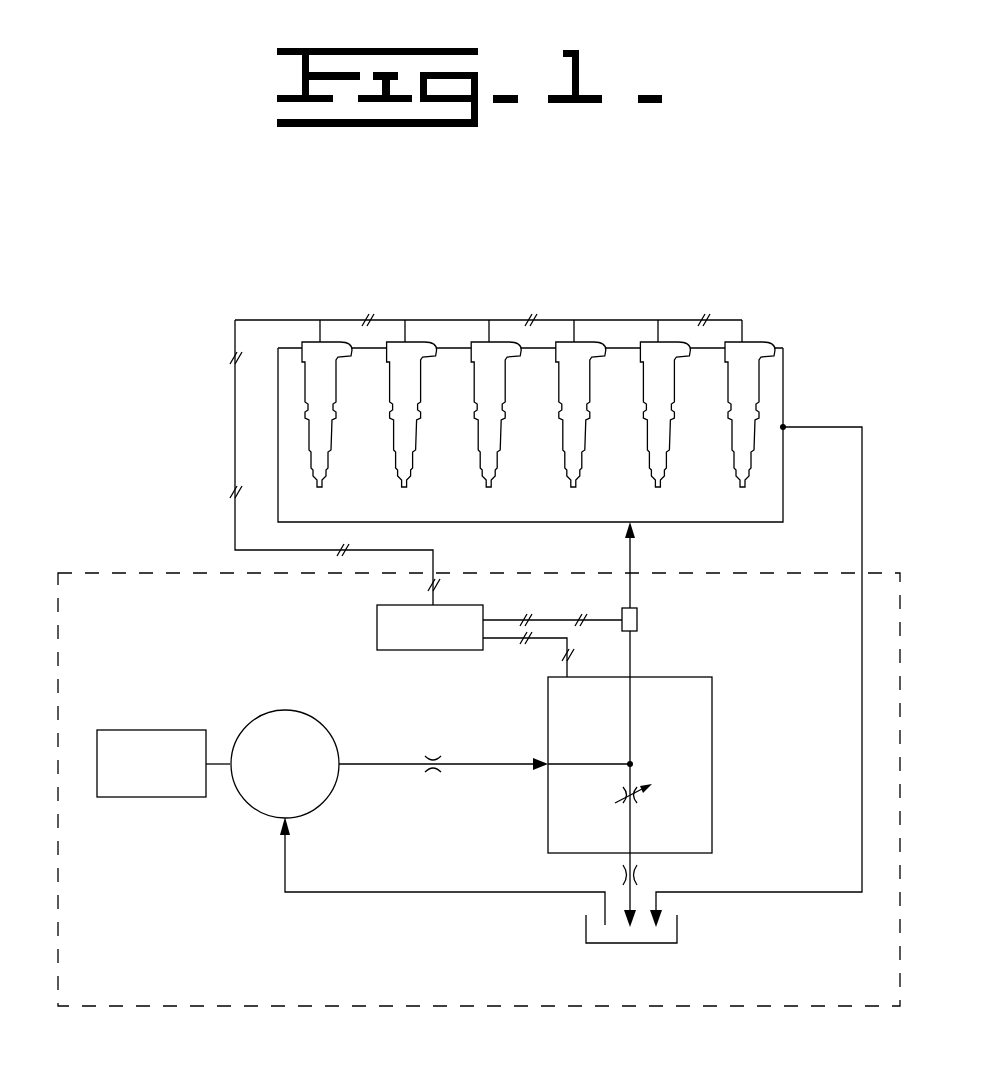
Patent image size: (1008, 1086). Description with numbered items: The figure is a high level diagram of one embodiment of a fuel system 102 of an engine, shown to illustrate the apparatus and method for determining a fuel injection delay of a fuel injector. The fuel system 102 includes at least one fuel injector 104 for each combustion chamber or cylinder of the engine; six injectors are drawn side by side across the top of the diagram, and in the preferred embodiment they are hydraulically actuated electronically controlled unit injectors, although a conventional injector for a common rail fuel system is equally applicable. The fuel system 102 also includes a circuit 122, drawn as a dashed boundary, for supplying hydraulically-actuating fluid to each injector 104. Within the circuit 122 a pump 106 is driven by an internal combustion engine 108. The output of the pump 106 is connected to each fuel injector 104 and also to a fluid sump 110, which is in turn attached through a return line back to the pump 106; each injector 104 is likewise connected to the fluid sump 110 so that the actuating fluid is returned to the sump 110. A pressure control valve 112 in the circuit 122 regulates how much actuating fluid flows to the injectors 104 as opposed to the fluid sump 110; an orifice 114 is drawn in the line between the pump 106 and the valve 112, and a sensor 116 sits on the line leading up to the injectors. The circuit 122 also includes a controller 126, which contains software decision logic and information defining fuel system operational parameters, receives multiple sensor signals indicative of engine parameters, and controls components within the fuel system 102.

The fuel system 102 is at (168, 266).
The fuel injector 104 is at (328, 342).
The pump 106 is at (278, 710).
The internal combustion engine 108 is at (125, 730).
The fluid sump 110 is at (585, 925).
The pressure control valve 112 is at (712, 758).
The orifice 114 is at (434, 770).
The pressure sensor 116 is at (637, 622).
The circuit 122 is at (140, 573).
The controller 126 is at (377, 637).